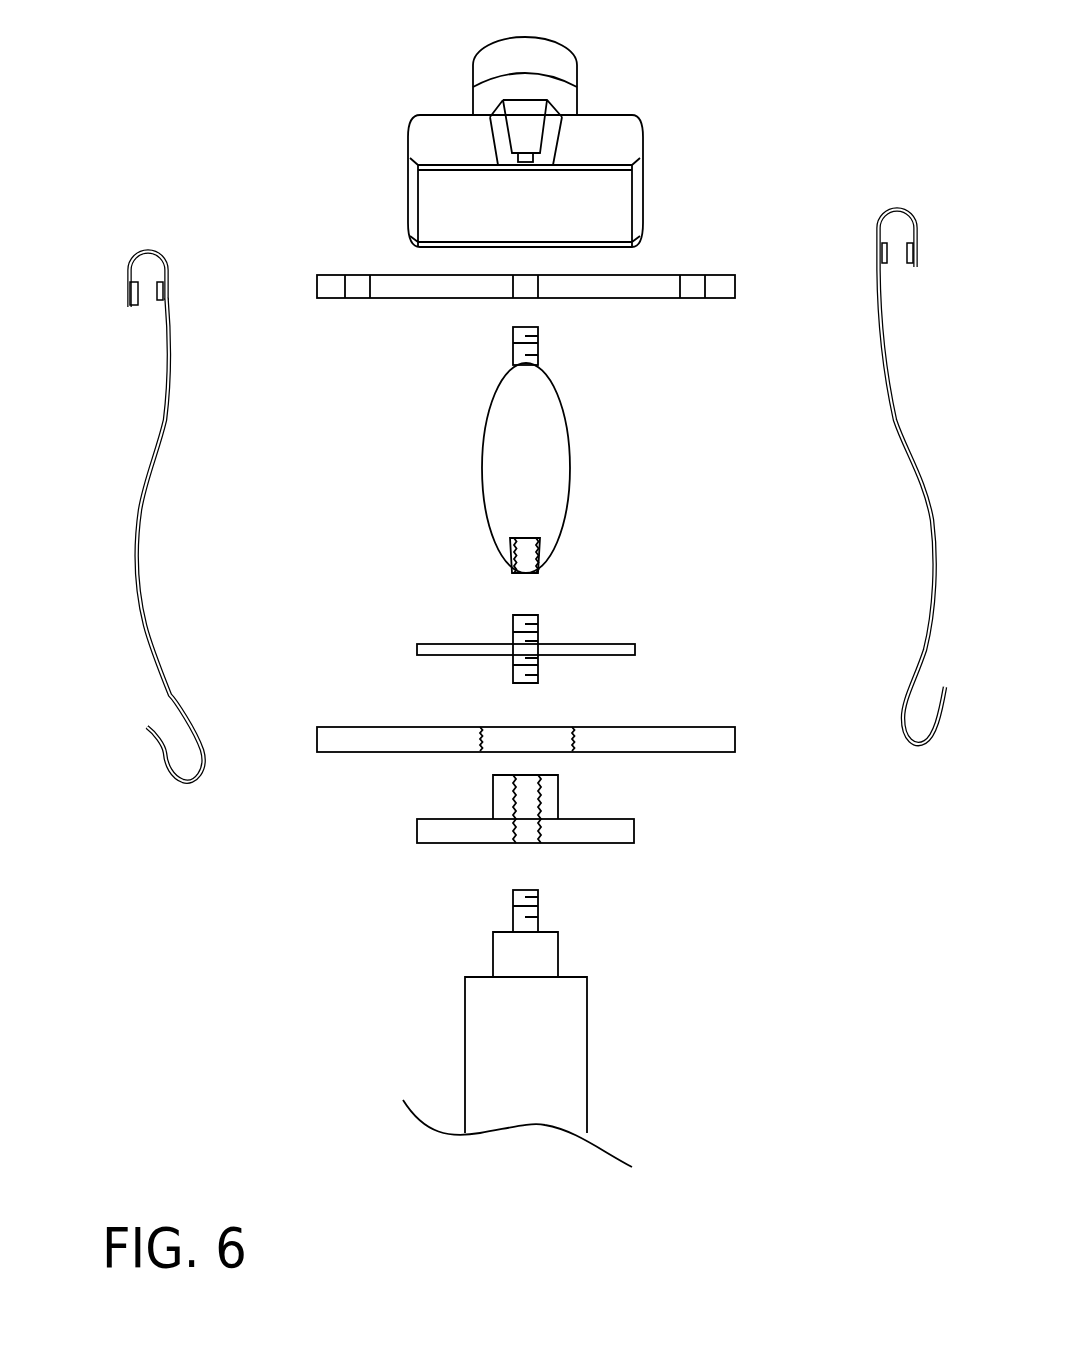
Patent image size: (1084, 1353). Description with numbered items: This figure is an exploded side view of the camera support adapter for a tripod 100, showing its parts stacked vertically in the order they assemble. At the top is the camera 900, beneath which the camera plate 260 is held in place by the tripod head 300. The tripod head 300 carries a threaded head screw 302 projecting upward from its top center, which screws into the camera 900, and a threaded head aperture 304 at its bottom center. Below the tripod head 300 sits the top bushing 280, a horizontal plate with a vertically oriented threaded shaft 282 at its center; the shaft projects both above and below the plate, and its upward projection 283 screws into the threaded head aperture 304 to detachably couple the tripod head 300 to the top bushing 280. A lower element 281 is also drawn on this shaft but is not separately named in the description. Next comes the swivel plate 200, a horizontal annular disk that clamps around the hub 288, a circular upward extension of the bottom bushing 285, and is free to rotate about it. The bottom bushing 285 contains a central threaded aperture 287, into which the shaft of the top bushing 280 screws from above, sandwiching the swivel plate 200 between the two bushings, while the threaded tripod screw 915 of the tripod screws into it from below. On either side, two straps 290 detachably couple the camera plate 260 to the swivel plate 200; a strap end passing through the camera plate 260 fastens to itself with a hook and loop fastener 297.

The camera support adapter for a tripod 100 is at (215, 1010).
The swivel plate 200 is at (367, 745).
The camera plate 260 is at (437, 300).
The top bushing 280 is at (447, 647).
The lower threaded portion 281 is at (535, 682).
The threaded shaft 282 is at (530, 647).
The upward projection 283 is at (513, 625).
The bottom bushing 285 is at (461, 835).
The threaded aperture 287 is at (528, 835).
The hub 288 is at (562, 803).
The one or more straps 290 is at (155, 657).
The hook and loop fastener 297 is at (123, 297).
The tripod head 300 is at (570, 472).
The threaded head screw 302 is at (538, 353).
The threaded head aperture 304 is at (523, 553).
The camera 900 is at (638, 180).
The threaded tripod screw 915 is at (537, 906).